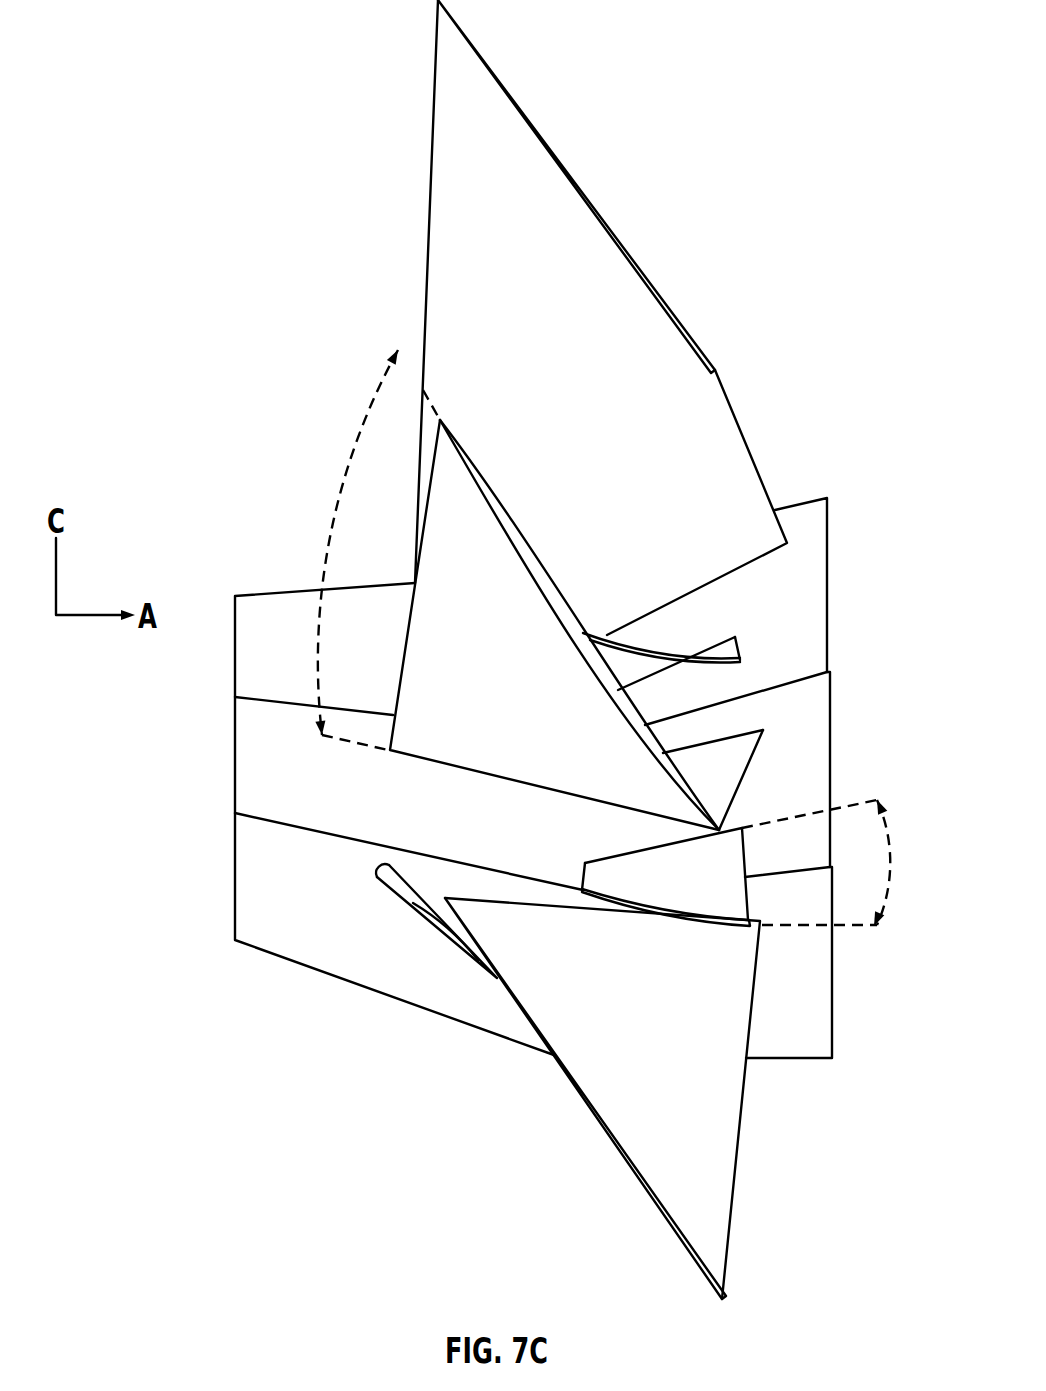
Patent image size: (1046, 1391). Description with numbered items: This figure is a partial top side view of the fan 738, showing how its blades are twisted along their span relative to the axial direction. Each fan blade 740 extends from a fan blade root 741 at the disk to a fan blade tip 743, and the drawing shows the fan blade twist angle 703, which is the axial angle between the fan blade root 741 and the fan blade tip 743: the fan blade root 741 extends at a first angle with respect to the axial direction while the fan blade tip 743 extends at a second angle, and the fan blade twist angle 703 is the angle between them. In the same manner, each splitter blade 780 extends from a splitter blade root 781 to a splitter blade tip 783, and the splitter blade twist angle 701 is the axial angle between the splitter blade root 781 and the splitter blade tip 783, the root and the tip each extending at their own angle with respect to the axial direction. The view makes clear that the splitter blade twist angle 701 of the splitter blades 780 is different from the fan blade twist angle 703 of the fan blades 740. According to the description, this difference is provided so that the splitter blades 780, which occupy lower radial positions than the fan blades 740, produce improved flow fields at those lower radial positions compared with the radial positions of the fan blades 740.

The fan 738 is at (226, 34).
The fan blade twist angle 703 is at (330, 535).
The fan blade tip 743 is at (505, 508).
The fan blade 740 is at (512, 588).
The fan blade root 741 is at (493, 777).
The splitter blade root 781 is at (635, 848).
The splitter blade 780 is at (637, 895).
The splitter blade tip 783 is at (655, 918).
The splitter blade twist angle 701 is at (890, 850).